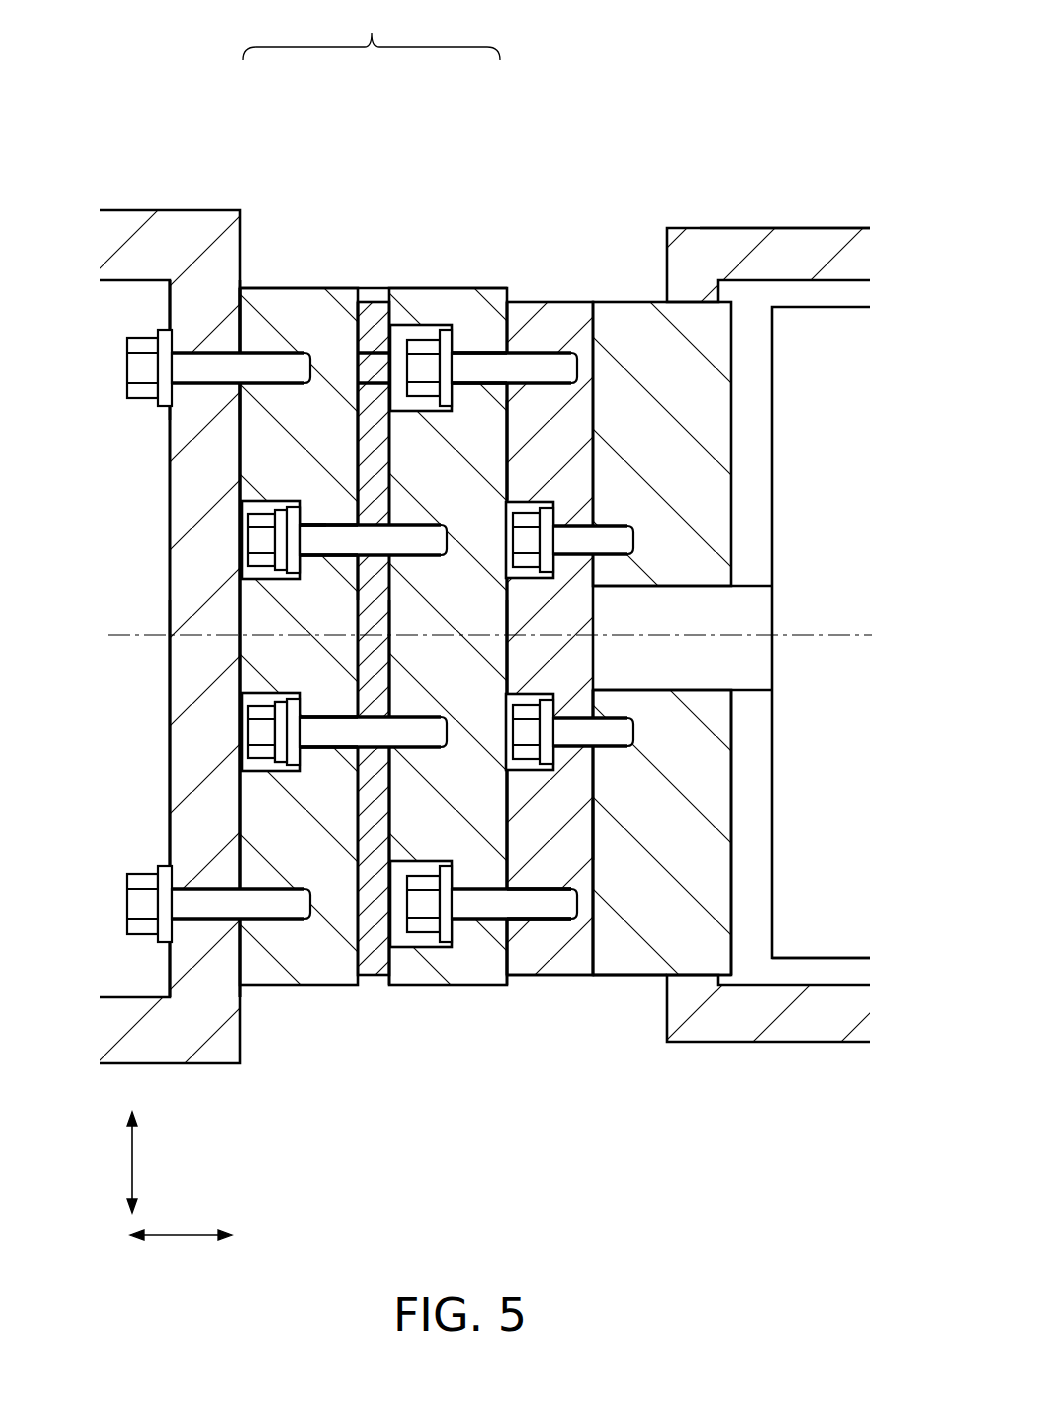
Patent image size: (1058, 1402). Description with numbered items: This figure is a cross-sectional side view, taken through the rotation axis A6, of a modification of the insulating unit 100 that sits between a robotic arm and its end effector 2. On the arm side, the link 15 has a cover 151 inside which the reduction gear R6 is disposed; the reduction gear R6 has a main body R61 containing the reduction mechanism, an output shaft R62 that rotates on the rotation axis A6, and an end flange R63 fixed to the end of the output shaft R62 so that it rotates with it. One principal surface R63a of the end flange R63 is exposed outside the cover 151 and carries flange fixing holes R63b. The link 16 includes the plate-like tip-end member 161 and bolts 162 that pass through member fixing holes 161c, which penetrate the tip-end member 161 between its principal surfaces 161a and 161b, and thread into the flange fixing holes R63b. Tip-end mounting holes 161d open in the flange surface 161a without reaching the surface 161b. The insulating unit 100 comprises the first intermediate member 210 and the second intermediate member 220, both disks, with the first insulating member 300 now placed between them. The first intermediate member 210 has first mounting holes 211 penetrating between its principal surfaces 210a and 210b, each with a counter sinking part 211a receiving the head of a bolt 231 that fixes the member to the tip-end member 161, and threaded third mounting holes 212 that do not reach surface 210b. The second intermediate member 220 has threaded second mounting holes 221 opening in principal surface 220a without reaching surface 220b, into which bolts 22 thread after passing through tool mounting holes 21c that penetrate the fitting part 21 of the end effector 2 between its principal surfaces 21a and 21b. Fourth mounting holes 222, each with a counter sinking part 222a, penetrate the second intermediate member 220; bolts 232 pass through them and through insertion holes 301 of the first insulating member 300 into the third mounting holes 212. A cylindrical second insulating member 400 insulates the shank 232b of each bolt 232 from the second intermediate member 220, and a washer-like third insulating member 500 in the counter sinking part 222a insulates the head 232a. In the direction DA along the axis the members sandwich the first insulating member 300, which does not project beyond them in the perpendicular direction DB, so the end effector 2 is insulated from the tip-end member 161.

The end effector 2 is at (128, 208).
The fitting part 21 is at (203, 852).
The principal surface of fitting part 21a is at (170, 973).
The principal surface of fitting part 21b is at (243, 973).
The tool mounting hole 21c is at (172, 330).
The bolt 22 is at (127, 370).
The insulating unit 100 is at (373, 144).
The second intermediate member 220 is at (297, 305).
The principal surface of second intermediate member 220a is at (240, 330).
The principal surface of second intermediate member 220b is at (360, 318).
The second mounting hole 221 is at (238, 328).
The fourth mounting hole 222 is at (333, 556).
The counter sinking part 222a is at (263, 587).
The bolt 231 is at (423, 340).
The bolt 232 is at (250, 718).
The head of bolt 232a is at (272, 760).
The shank of bolt 232b is at (337, 737).
The first insulating member 300 is at (373, 310).
The insertion hole 301 is at (389, 378).
The first intermediate member 210 is at (450, 288).
The principal surface of first intermediate member 210a is at (375, 980).
The principal surface of first intermediate member 210b is at (520, 960).
The first mounting hole 211 is at (507, 382).
The counter sinking part 211a is at (507, 430).
The third mounting hole 212 is at (470, 480).
The tip-end member 161 is at (557, 302).
The principal surface of tip-end member 161a is at (483, 960).
The principal surface of tip-end member 161b is at (595, 953).
The member fixing hole 161c is at (593, 792).
The tip-end mounting hole 161d is at (570, 898).
The link 16 is at (581, 298).
The bolt 162 is at (660, 800).
The link 15 is at (737, 220).
The cover 151 is at (777, 227).
The reduction gear R6 is at (825, 307).
The main body R61 is at (842, 958).
The output shaft R62 is at (750, 586).
The end flange R63 is at (650, 977).
The principal surface of end flange R63a is at (572, 960).
The flange fixing hole R63b is at (633, 735).
The rotation axis A6 is at (118, 636).
The second insulating member 400 is at (325, 521).
The third insulating member 500 is at (312, 508).
The direction DA is at (181, 1253).
The direction DB is at (108, 1162).